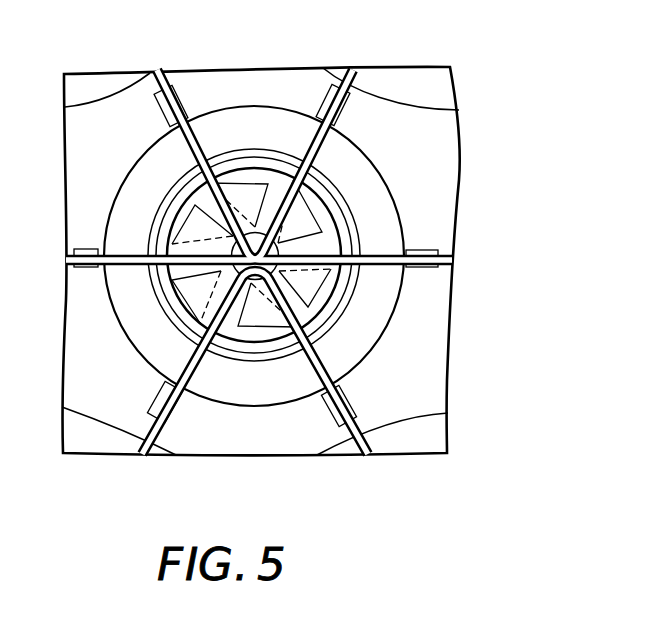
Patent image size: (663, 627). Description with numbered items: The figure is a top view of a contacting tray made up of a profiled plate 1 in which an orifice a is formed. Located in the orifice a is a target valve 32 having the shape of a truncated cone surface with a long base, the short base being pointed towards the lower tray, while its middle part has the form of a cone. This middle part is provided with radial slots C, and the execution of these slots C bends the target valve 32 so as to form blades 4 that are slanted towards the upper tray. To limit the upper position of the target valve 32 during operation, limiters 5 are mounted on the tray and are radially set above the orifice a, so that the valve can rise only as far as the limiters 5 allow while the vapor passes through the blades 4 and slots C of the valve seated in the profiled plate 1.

The profiled plate 1 is at (440, 92).
The target valve 32 is at (230, 163).
The orifice a is at (178, 202).
The blade 4 is at (313, 288).
The limiter 5 is at (423, 250).
The radial slot C is at (234, 334).